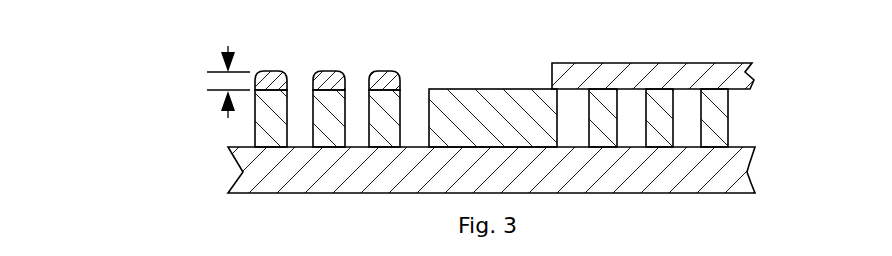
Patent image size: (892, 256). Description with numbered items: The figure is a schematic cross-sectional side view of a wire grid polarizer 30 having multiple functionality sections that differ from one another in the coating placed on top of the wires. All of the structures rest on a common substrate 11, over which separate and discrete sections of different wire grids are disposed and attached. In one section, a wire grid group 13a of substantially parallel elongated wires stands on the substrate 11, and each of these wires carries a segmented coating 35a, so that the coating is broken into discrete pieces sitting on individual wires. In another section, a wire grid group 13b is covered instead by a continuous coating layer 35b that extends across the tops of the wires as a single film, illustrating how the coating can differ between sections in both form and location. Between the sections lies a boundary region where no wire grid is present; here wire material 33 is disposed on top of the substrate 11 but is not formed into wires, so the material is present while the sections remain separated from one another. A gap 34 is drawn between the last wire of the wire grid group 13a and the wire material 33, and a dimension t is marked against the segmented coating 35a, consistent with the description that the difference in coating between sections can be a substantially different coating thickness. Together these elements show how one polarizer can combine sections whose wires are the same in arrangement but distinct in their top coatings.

The wire grid polarizer 30 is at (97, 141).
The substrate 11 is at (253, 180).
The wire grid group 13a is at (263, 128).
The wire grid group 13b is at (717, 117).
The wire material 33 is at (503, 103).
The gap 34 is at (403, 98).
The segmented coating 35a is at (328, 82).
The continuous coating layer 35b is at (612, 73).
The thickness t is at (228, 71).